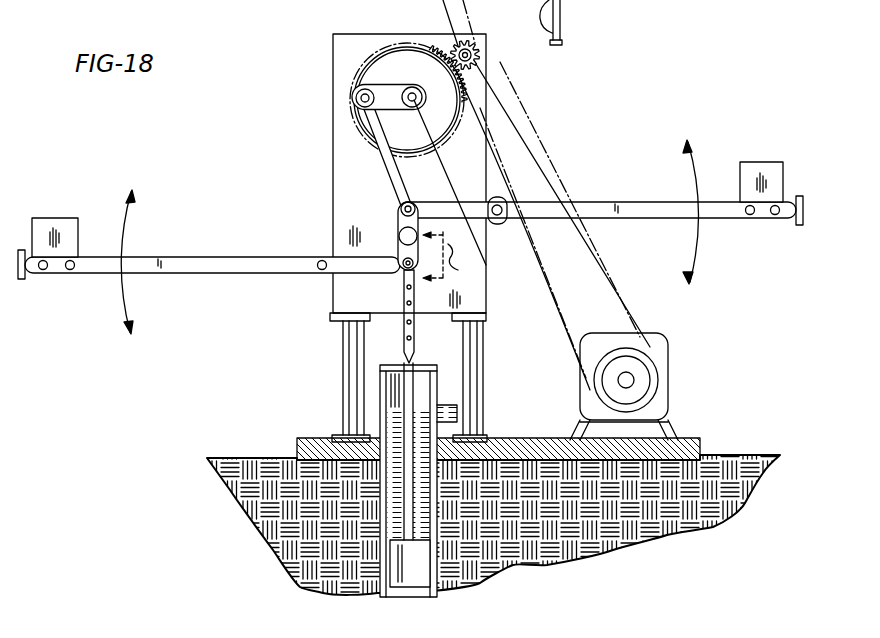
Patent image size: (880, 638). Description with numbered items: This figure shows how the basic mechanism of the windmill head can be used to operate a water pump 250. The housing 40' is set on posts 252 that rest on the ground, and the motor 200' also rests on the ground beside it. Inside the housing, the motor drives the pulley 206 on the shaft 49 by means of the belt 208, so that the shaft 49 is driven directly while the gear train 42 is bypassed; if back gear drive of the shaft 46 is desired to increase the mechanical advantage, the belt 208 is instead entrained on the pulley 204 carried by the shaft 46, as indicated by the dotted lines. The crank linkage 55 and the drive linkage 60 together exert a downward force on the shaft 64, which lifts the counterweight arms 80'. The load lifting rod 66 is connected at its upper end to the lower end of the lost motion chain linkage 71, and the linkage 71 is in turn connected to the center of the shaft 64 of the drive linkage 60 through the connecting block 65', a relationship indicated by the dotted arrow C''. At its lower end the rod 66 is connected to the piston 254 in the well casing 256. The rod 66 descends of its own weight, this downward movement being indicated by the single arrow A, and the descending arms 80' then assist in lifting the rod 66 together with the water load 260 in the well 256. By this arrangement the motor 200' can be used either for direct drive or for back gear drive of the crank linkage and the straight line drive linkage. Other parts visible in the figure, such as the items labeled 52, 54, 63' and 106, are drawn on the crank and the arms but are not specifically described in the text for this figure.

The housing 40' is at (358, 173).
The gear train 42 is at (480, 48).
The shaft 46 is at (457, 44).
The shaft 49 is at (400, 88).
The crank arm 52 is at (392, 82).
The connecting rod 54 is at (378, 160).
The crank linkage 55 is at (365, 152).
The drive linkage 60 is at (390, 218).
The pivot pin 63' is at (419, 190).
The shaft 64 is at (398, 237).
The connecting block 65' is at (336, 296).
The load lifting rod 66 is at (435, 473).
The lost motion chain linkage 71 is at (403, 333).
The counterweight arms 80' is at (410, 237).
The weight block 106 is at (95, 182).
The motor 200' is at (655, 376).
The pulley 204 is at (483, 95).
The pulley 206 is at (418, 84).
The belt 208 is at (577, 268).
The water pump 250 is at (372, 517).
The posts 252 is at (343, 388).
The piston 254 is at (422, 577).
The well casing 256 is at (383, 483).
The water load 260 is at (345, 586).
The single arrow A is at (588, 34).
The dotted arrow C'' is at (457, 257).